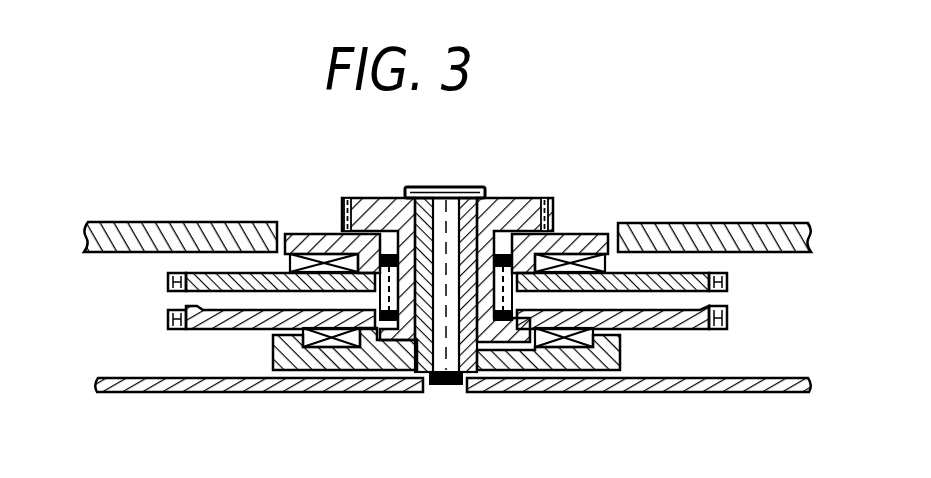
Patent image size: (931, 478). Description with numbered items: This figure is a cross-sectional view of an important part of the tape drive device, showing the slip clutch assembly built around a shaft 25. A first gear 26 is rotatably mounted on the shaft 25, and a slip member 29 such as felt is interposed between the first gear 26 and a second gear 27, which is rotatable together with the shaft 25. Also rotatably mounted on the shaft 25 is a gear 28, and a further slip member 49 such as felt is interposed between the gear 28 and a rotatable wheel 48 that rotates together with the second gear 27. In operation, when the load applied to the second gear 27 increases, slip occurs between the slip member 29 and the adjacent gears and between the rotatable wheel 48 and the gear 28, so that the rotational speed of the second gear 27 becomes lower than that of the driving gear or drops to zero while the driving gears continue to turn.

The shaft 25 is at (443, 385).
The first gear 26 is at (700, 232).
The second gear 27 is at (522, 197).
The gear 28 is at (727, 318).
The slip member 29 is at (578, 236).
The rotatable wheel 48 is at (543, 370).
The slip member 49 is at (566, 345).